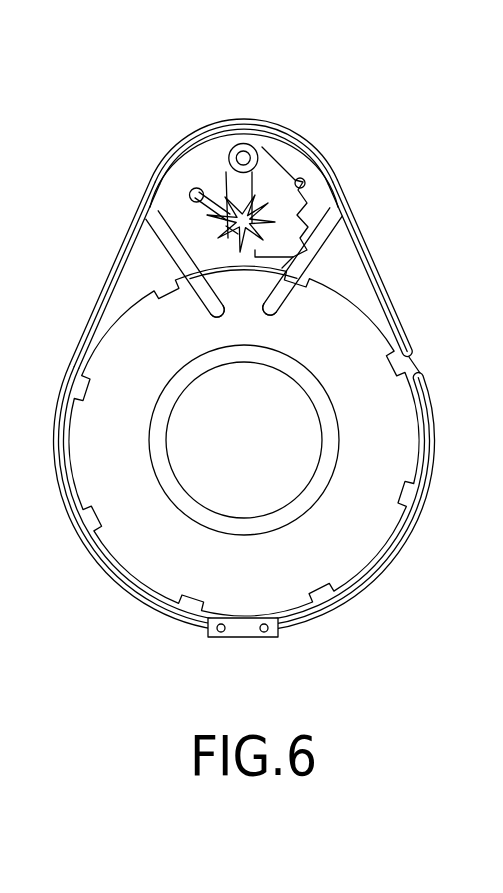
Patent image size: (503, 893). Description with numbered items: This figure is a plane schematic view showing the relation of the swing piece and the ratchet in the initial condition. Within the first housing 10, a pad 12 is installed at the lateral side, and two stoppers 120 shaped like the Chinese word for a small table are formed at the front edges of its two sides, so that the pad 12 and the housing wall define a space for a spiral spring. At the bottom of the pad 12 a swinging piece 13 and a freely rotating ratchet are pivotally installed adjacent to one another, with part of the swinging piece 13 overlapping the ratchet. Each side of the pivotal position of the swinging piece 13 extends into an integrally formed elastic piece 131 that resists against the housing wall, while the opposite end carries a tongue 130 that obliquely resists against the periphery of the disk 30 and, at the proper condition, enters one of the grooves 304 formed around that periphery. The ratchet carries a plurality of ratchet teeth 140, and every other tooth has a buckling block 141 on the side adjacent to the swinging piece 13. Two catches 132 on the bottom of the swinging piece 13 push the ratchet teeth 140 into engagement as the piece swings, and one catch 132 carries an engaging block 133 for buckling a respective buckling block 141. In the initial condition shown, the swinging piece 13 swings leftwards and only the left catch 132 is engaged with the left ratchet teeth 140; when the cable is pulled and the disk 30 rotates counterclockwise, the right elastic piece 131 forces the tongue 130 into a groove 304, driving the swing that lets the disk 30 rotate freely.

The first housing 10 is at (239, 637).
The pad 12 is at (182, 239).
The swinging piece 13 is at (267, 172).
The disk 30 is at (357, 528).
The stoppers 120 is at (196, 292).
The tongue 130 is at (307, 236).
The elastic piece 131 is at (222, 162).
The catch 132 is at (230, 212).
The engaging block 133 is at (232, 228).
The ratchet teeth 140 is at (249, 143).
The buckling block 141 is at (213, 167).
The grooves 304 is at (312, 288).